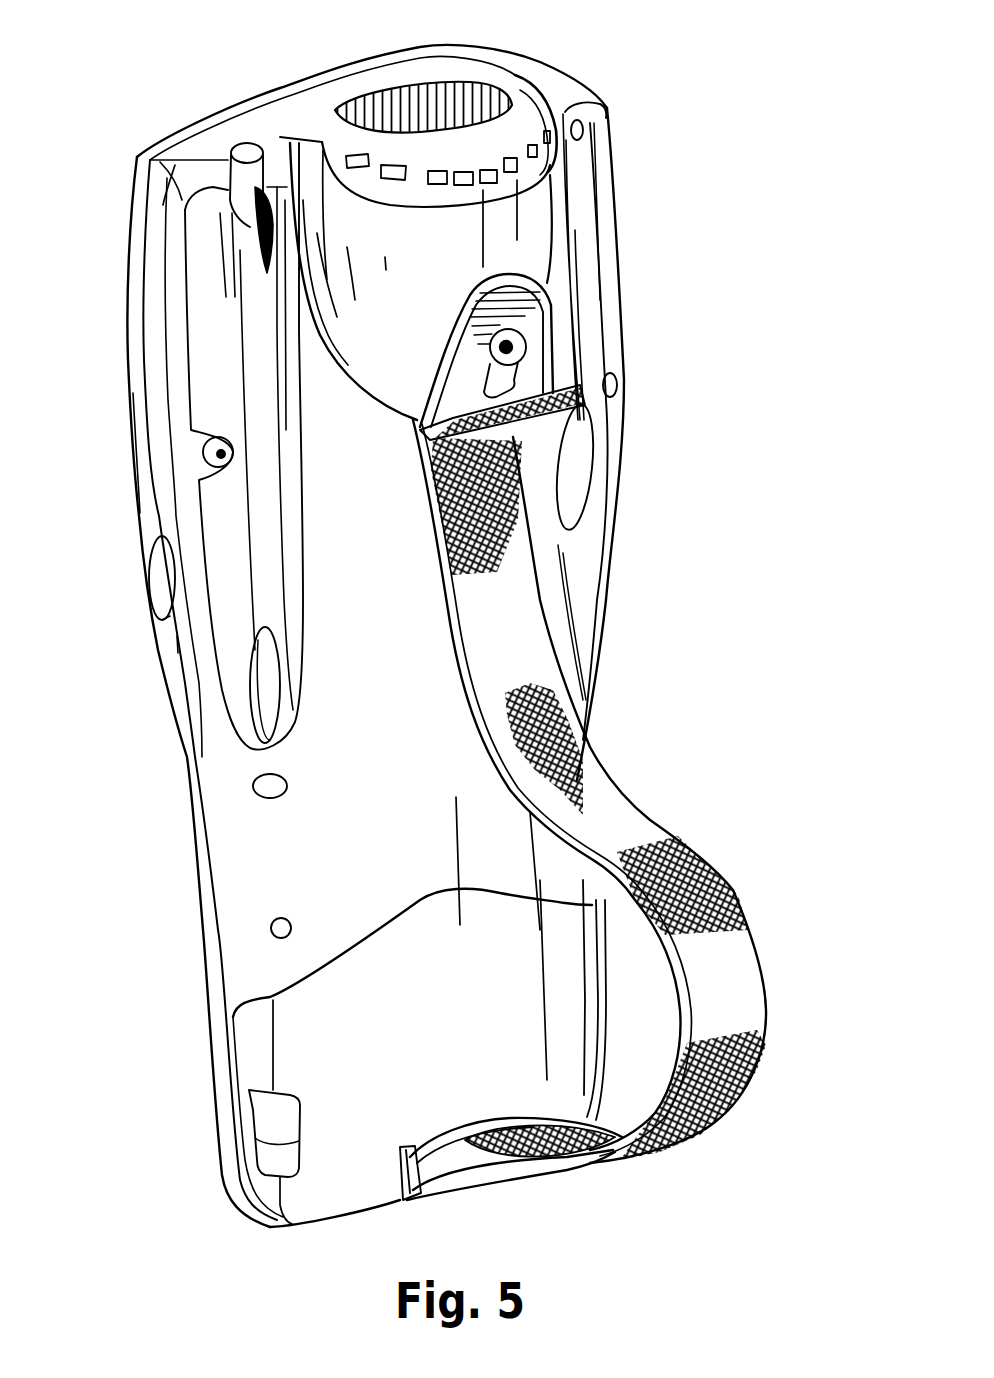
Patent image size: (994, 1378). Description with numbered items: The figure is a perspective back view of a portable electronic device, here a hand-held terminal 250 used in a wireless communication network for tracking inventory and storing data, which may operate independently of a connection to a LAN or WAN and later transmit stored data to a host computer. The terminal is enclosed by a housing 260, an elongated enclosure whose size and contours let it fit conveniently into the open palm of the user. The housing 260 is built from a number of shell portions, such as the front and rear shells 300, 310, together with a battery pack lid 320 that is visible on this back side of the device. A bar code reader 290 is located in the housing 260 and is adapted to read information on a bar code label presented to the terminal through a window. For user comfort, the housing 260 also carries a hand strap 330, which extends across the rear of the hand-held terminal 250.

The hand-held terminal 250 is at (608, 47).
The housing 260 is at (617, 270).
The bar code reader 290 is at (373, 110).
The front shell 300 is at (190, 757).
The rear shell 310 is at (213, 680).
The battery pack lid 320 is at (250, 1070).
The hand strap 330 is at (733, 917).